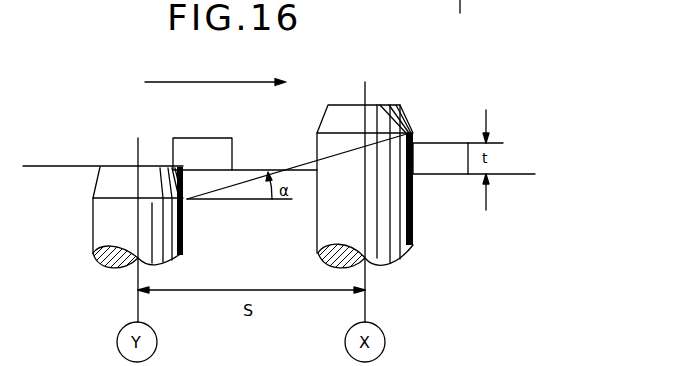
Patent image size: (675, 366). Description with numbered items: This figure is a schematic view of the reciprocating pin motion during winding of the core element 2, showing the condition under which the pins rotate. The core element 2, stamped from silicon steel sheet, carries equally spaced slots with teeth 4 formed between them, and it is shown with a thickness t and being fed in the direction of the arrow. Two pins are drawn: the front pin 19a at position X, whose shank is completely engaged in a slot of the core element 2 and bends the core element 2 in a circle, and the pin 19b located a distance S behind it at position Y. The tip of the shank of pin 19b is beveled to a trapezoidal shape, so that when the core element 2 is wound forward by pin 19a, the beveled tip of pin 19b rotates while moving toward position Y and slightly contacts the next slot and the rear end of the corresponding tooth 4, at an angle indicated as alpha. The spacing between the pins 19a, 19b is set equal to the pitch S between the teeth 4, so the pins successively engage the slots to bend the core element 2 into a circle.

The core element 2 is at (422, 138).
The teeth 4 is at (190, 155).
The pin 19a is at (385, 218).
The pin 19b is at (110, 233).